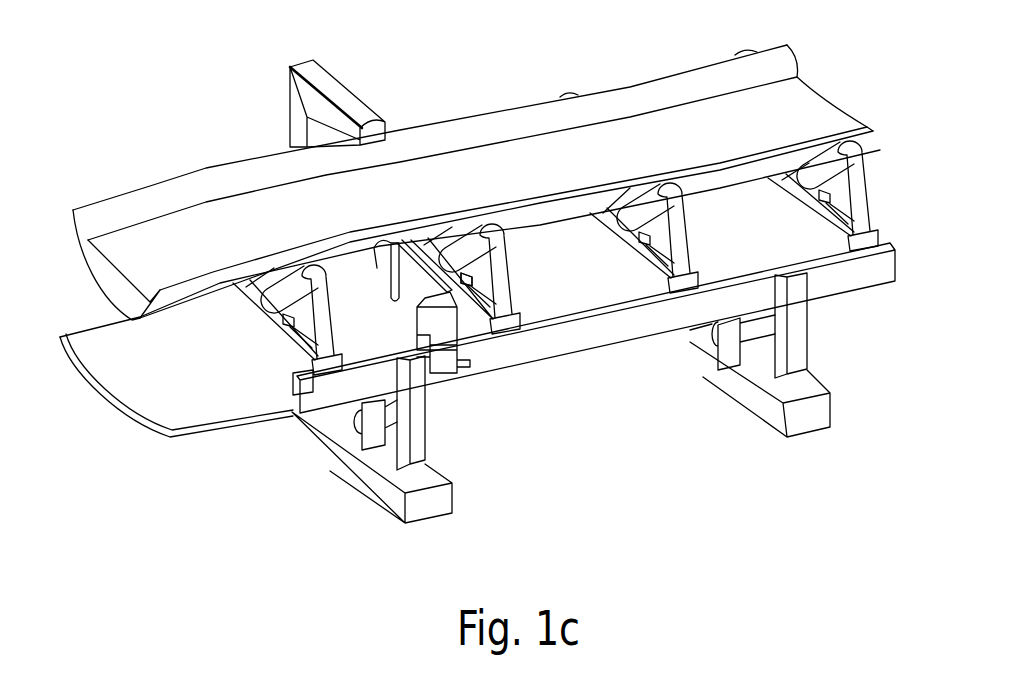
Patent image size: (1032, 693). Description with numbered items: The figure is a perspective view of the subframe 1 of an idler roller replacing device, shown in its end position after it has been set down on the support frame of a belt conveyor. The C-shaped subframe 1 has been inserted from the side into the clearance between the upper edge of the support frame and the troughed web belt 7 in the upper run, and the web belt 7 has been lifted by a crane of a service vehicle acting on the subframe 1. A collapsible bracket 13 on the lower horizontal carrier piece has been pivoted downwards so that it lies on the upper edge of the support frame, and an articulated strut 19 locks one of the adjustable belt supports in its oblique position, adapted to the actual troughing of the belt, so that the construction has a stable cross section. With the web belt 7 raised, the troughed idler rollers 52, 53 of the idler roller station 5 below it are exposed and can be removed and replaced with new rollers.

The subframe 1 is at (300, 118).
The web belt 7 is at (127, 205).
The idler roller station 5 is at (667, 177).
The idler roller 52 is at (443, 250).
The idler roller 53 is at (477, 255).
The collapsible bracket 13 is at (452, 363).
The strut 19 is at (405, 245).